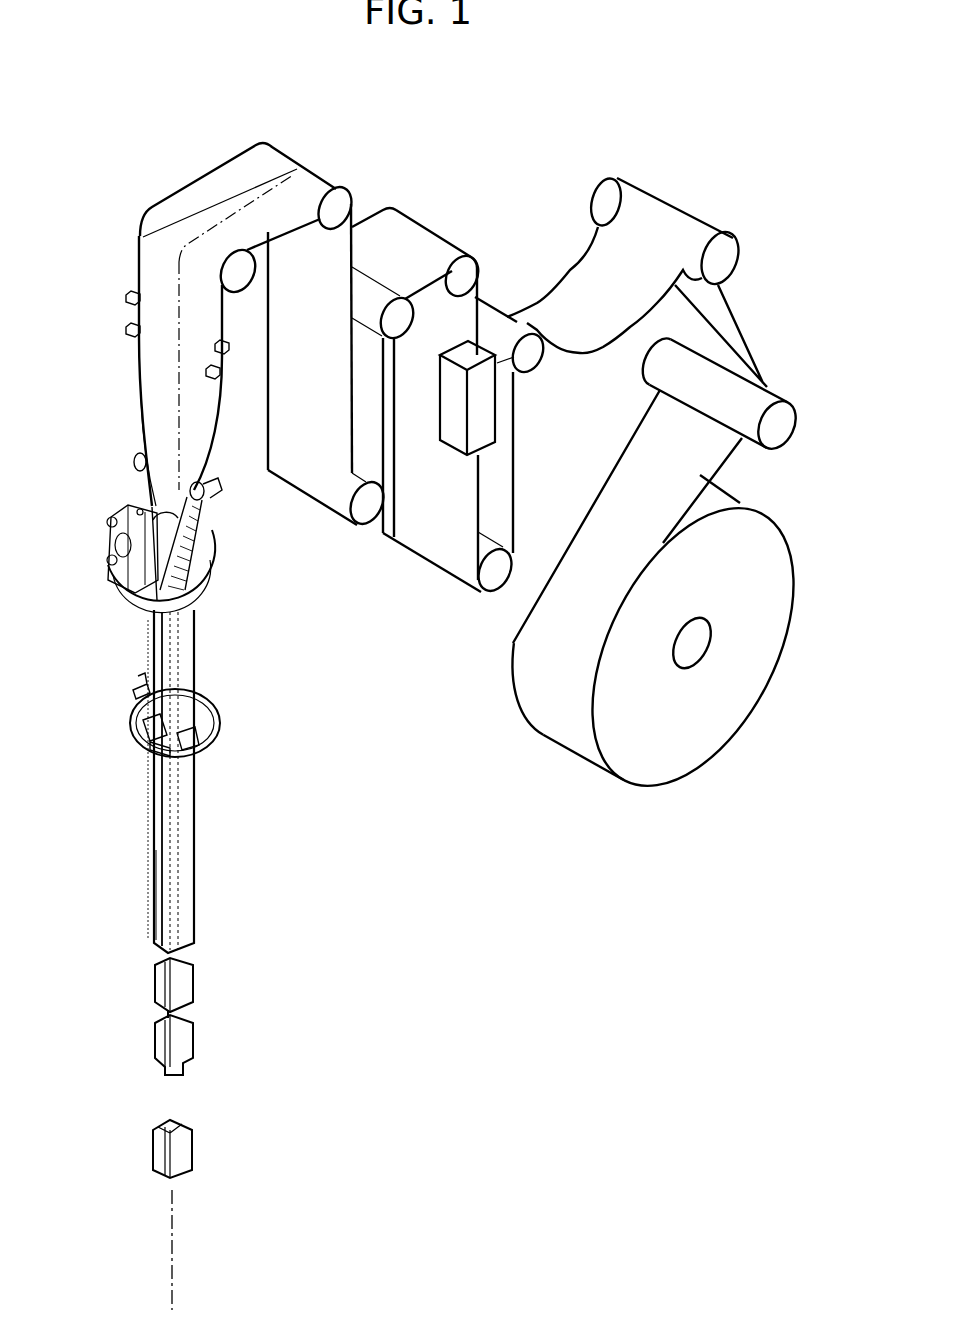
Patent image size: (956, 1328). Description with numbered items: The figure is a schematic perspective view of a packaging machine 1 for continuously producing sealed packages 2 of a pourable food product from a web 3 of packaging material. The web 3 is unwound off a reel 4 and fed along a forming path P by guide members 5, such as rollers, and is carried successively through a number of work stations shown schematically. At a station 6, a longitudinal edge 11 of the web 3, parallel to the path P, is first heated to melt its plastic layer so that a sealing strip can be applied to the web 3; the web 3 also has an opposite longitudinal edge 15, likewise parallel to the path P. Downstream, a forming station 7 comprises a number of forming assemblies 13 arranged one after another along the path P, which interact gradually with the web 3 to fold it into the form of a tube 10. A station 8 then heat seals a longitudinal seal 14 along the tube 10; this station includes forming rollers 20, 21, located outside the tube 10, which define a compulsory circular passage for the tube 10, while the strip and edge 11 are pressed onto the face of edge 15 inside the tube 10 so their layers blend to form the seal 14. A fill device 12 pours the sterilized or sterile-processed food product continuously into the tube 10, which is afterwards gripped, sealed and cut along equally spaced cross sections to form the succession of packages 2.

The packaging machine 1 is at (577, 128).
The sealed packages 2 is at (185, 990).
The web 3 is at (662, 220).
The reel 4 is at (777, 572).
The guide members 5 is at (352, 208).
The station for applying a sealing strip 6 is at (459, 466).
The forming station 7 is at (115, 472).
The station for heat sealing 8 is at (180, 728).
The tube 10 is at (175, 781).
The longitudinal edge 11 is at (477, 513).
The fill device 12 is at (182, 652).
The forming assemblies 13 is at (128, 330).
The longitudinal seal 14 is at (157, 875).
The longitudinal edge 15 is at (397, 463).
The forming rollers 20 is at (150, 716).
The forming rollers 21 is at (142, 733).
The forming path P is at (173, 1270).